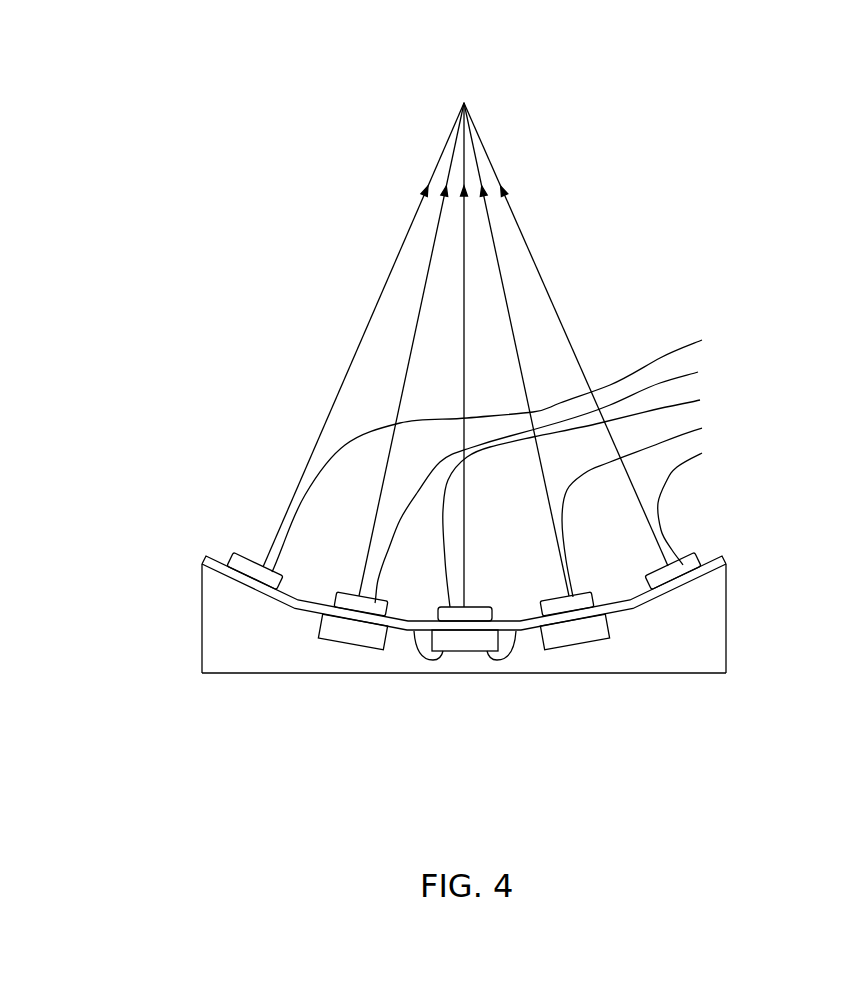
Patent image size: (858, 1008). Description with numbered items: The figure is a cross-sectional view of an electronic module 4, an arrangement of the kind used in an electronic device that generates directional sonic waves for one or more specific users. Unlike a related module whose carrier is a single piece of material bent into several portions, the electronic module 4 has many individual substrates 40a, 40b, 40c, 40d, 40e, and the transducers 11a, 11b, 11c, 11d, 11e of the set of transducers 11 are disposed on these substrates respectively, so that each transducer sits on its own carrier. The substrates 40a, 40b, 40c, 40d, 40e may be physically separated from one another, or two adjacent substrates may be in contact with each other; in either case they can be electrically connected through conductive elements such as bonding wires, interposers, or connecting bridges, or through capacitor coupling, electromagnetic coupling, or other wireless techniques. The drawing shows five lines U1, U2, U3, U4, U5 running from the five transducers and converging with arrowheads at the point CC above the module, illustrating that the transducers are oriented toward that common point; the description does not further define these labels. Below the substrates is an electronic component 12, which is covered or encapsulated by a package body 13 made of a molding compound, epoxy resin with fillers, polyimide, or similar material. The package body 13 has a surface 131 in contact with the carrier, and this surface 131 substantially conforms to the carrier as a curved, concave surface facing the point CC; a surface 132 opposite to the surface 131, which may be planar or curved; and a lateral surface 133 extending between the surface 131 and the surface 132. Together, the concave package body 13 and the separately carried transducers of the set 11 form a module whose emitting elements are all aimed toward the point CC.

The electronic module 4 is at (126, 55).
The point CC is at (464, 87).
The first sensing direction U1 is at (403, 242).
The second sensing direction U2 is at (420, 310).
The third sensing direction U3 is at (463, 375).
The fourth sensing direction U4 is at (510, 310).
The fifth sensing direction U5 is at (530, 242).
The set of transducers 11 is at (750, 326).
The transducer 11a is at (510, 450).
The transducer 11b is at (562, 480).
The transducer 11c is at (595, 495).
The transducer 11d is at (655, 504).
The transducer 11e is at (703, 502).
The electronic component 12 is at (472, 640).
The package body 13 is at (455, 618).
The surface 131 is at (220, 560).
The surface 132 is at (224, 675).
The lateral surface 133 is at (202, 618).
The substrate 40a is at (252, 578).
The substrate 40b is at (358, 616).
The substrate 40c is at (463, 628).
The substrate 40d is at (572, 616).
The substrate 40e is at (673, 578).